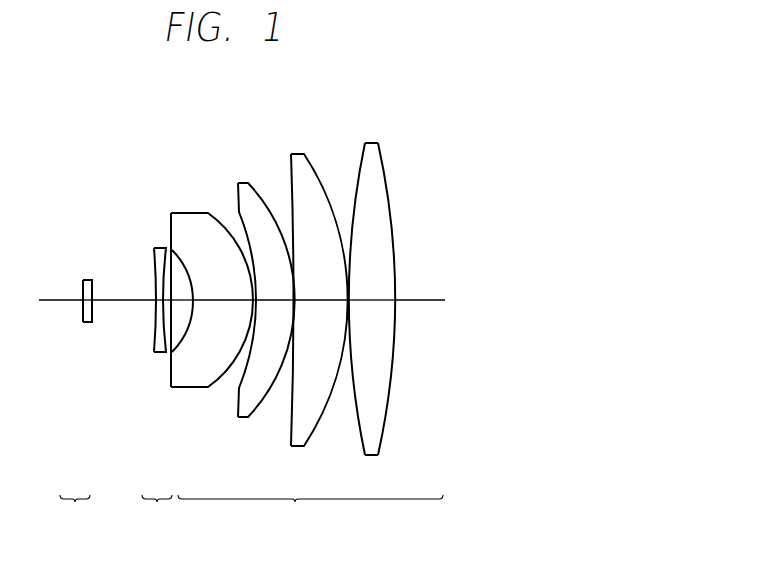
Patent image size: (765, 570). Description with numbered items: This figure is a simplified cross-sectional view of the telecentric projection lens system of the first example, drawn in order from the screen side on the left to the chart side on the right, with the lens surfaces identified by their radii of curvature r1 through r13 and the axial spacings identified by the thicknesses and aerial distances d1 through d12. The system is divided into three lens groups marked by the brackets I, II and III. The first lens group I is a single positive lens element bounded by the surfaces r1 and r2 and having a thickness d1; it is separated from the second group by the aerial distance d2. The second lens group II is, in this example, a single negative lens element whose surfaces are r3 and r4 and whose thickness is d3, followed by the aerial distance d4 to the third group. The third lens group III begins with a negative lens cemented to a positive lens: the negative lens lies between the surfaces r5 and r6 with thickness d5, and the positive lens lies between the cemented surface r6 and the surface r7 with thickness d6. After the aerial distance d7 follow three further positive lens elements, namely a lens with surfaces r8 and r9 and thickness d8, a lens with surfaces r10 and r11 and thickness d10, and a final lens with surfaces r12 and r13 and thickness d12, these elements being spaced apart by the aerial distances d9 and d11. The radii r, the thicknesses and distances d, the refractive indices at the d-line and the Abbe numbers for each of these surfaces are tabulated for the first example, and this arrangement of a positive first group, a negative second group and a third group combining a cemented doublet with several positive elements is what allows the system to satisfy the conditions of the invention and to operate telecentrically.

The radius of curvature of the first surface r1 is at (83, 282).
The radius of curvature of the second surface r2 is at (92, 282).
The radius of curvature of the third surface r3 is at (149, 247).
The radius of curvature of the fourth surface r4 is at (160, 247).
The radius of curvature of the fifth surface r5 is at (176, 250).
The radius of curvature of the sixth surface r6 is at (202, 300).
The radius of curvature of the seventh surface r7 is at (237, 212).
The radius of curvature of the eighth surface r8 is at (251, 188).
The radius of curvature of the ninth surface r9 is at (291, 184).
The radius of curvature of the tenth surface r10 is at (311, 167).
The radius of curvature of the eleventh surface r11 is at (362, 172).
The radius of curvature of the twelfth surface r12 is at (366, 144).
The radius of curvature of the thirteenth surface r13 is at (384, 152).
The thickness of the first lens d1 is at (87, 323).
The aerial distance between the first and second lens groups d2 is at (119, 302).
The thickness of the second lens d3 is at (157, 353).
The aerial distance between the second and third lens groups d4 is at (172, 352).
The thickness of the negative lens of the cemented lens d5 is at (200, 302).
The thickness of the positive lens of the cemented lens d6 is at (222, 302).
The aerial distance after the cemented lens d7 is at (262, 302).
The thickness of the first single positive lens of the third group d8 is at (285, 302).
The aerial distance between positive lens elements d9 is at (297, 302).
The thickness of the second single positive lens of the third group d10 is at (322, 302).
The aerial distance before the last lens d11 is at (352, 302).
The thickness of the last lens d12 is at (395, 302).
The first lens group I is at (78, 520).
The second lens group II is at (160, 520).
The third lens group III is at (304, 520).